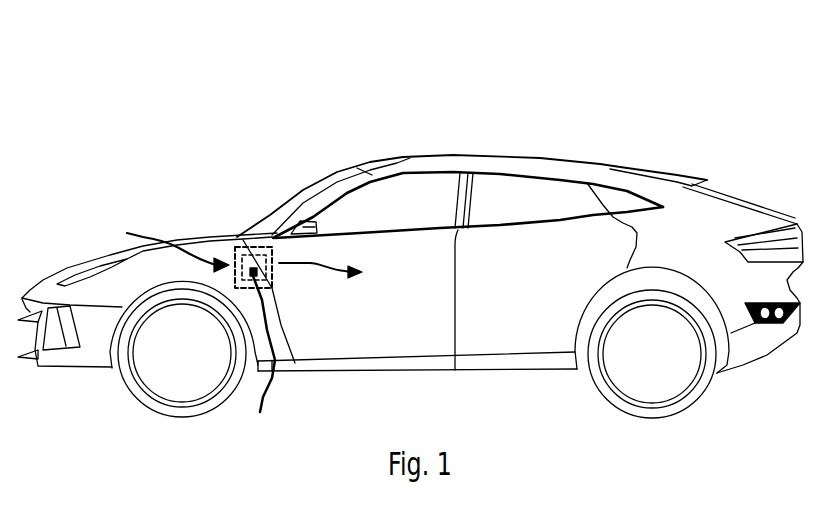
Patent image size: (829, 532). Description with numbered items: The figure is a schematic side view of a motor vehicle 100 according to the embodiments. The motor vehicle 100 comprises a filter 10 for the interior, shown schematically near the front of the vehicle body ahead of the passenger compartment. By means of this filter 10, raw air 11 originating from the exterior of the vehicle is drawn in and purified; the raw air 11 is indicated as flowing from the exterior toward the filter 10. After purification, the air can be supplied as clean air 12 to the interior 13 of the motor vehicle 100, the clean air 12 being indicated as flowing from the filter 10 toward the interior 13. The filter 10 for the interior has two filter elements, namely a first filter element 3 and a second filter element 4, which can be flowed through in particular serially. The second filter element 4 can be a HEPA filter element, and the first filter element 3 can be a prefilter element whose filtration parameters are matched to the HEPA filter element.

The motor vehicle 100 is at (682, 109).
The filter for the interior 10 is at (237, 247).
The raw air 11 is at (145, 233).
The clean air 12 is at (318, 263).
The interior 13 is at (409, 217).
The first filter element 3 is at (260, 361).
The second filter element 4 is at (260, 361).